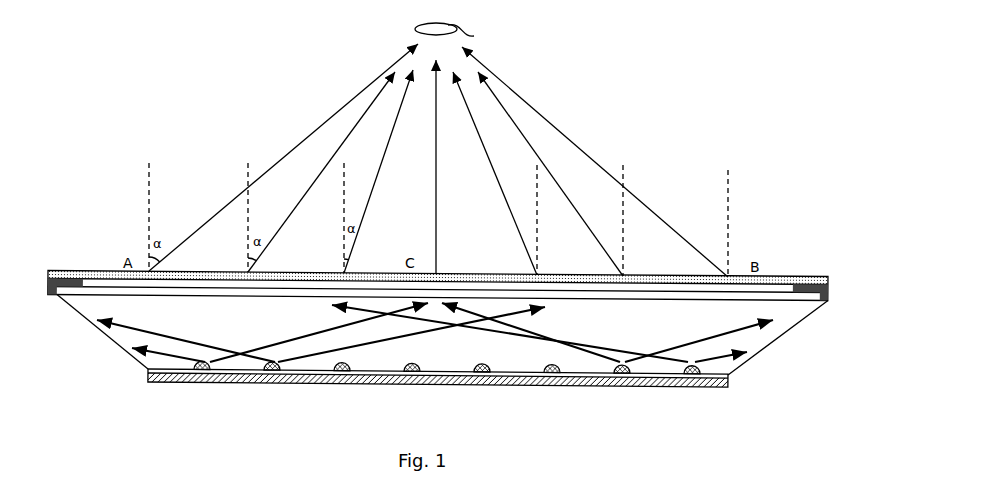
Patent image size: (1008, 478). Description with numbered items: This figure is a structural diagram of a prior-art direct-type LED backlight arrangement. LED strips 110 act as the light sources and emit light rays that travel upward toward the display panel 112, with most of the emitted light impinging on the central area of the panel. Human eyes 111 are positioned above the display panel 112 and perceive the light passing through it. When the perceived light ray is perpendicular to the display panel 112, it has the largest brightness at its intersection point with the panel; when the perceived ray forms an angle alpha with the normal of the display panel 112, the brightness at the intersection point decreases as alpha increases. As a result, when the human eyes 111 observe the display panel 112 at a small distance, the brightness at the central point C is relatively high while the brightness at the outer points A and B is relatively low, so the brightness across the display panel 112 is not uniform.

The LED strips 110 is at (342, 370).
The human eyes 111 is at (457, 30).
The display panel 112 is at (807, 285).